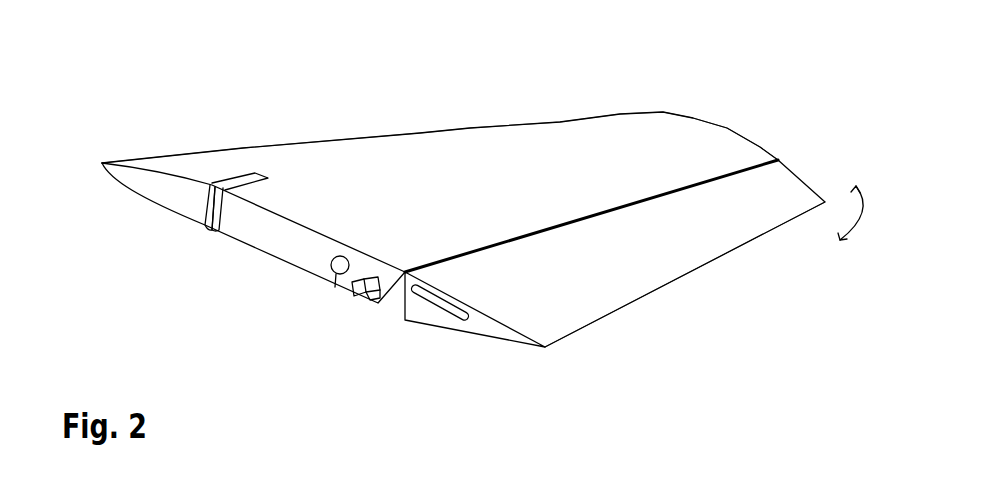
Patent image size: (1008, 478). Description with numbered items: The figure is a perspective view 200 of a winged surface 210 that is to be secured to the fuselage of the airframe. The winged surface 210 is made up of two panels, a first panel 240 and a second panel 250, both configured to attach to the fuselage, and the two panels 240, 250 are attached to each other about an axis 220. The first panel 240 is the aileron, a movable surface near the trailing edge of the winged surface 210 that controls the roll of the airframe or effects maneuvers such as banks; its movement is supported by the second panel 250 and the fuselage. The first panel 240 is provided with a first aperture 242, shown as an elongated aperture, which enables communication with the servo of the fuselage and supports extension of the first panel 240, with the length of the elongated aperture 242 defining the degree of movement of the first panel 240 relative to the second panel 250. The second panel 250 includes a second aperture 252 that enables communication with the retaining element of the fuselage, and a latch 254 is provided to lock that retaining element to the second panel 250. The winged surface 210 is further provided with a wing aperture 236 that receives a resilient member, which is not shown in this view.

The perspective view 200 is at (463, 278).
The winged surface 210 is at (468, 128).
The axis 220 is at (603, 217).
The wing aperture 236 is at (240, 172).
The first panel 240 is at (548, 305).
The first aperture 242 is at (435, 305).
The second panel 250 is at (697, 147).
The second aperture 252 is at (335, 287).
The latch 254 is at (377, 302).